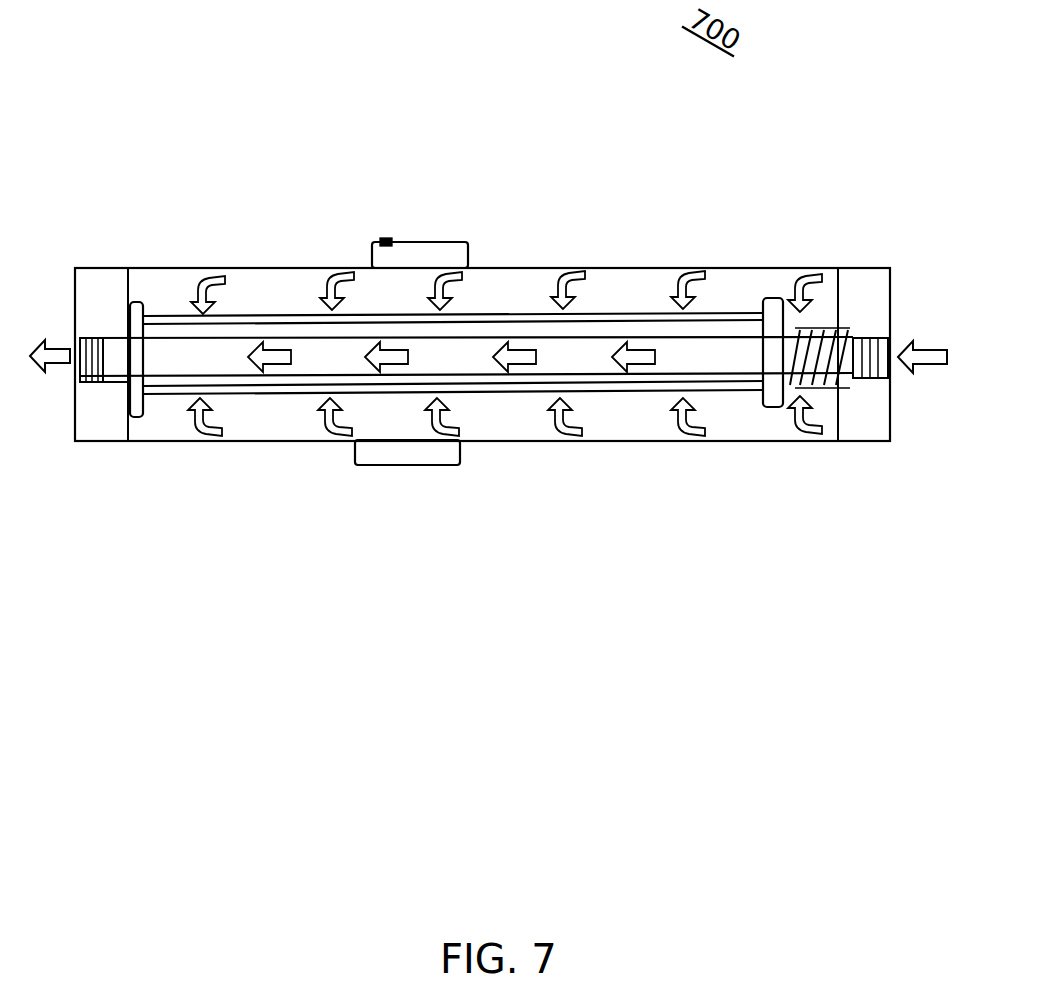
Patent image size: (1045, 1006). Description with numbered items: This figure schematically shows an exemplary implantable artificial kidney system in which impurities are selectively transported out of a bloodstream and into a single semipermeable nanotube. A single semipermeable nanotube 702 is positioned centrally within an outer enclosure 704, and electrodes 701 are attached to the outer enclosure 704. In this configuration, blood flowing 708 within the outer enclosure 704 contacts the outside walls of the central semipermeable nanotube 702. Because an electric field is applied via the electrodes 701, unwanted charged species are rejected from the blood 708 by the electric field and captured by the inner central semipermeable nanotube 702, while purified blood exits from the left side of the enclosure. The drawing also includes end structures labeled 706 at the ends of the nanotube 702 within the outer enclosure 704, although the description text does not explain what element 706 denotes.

The electrodes 701 is at (433, 230).
The semipermeable nanotube 702 is at (508, 306).
The outer enclosure 704 is at (568, 258).
The flange / end plate 706 is at (167, 393).
The blood flowing 708 is at (42, 330).